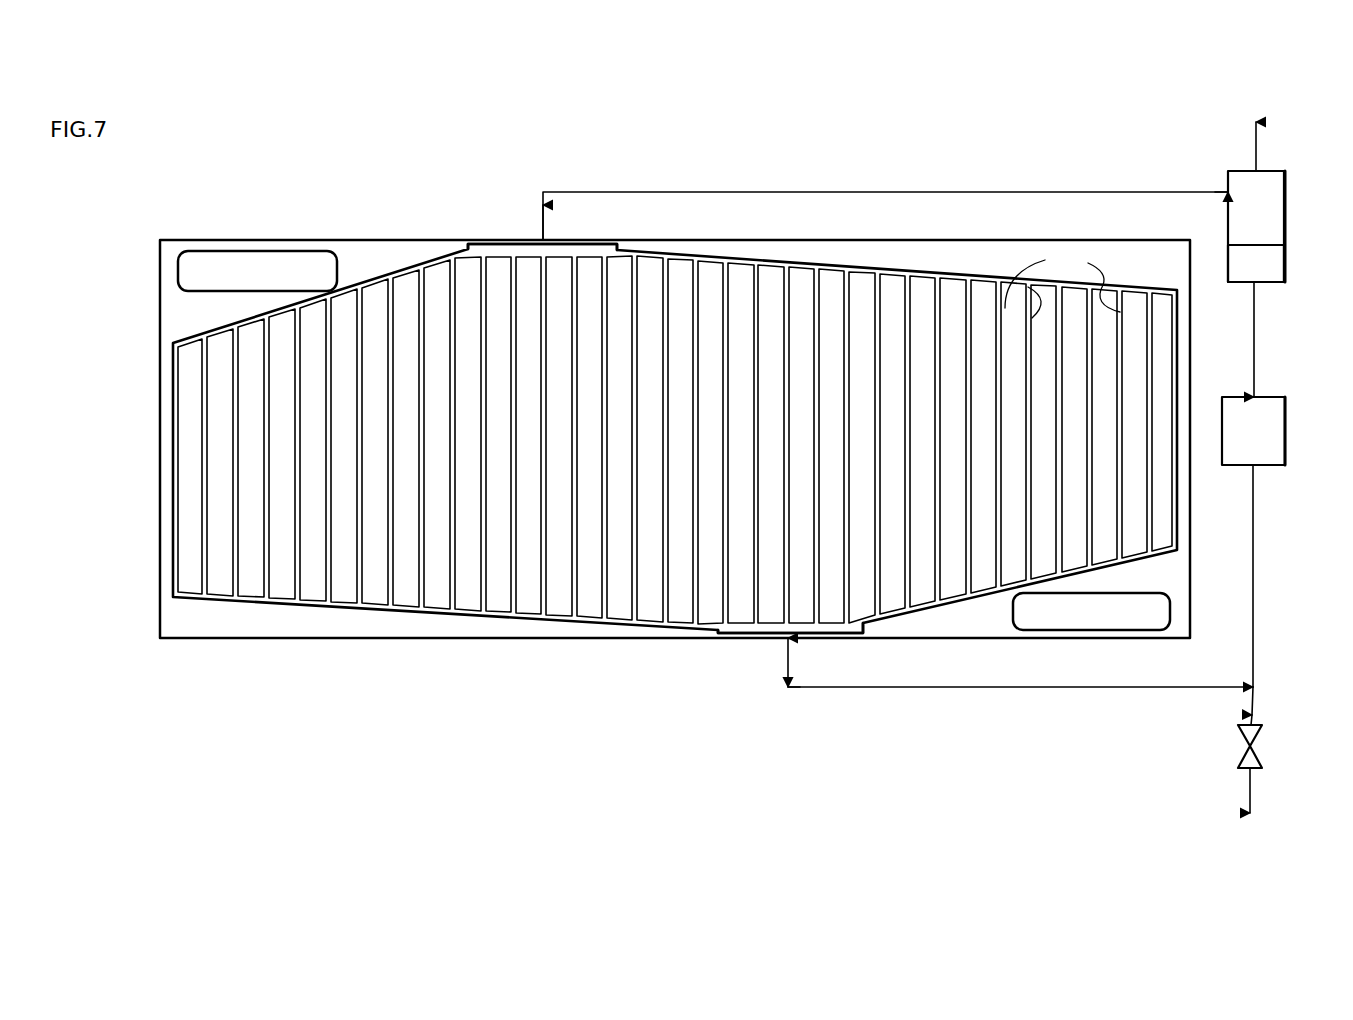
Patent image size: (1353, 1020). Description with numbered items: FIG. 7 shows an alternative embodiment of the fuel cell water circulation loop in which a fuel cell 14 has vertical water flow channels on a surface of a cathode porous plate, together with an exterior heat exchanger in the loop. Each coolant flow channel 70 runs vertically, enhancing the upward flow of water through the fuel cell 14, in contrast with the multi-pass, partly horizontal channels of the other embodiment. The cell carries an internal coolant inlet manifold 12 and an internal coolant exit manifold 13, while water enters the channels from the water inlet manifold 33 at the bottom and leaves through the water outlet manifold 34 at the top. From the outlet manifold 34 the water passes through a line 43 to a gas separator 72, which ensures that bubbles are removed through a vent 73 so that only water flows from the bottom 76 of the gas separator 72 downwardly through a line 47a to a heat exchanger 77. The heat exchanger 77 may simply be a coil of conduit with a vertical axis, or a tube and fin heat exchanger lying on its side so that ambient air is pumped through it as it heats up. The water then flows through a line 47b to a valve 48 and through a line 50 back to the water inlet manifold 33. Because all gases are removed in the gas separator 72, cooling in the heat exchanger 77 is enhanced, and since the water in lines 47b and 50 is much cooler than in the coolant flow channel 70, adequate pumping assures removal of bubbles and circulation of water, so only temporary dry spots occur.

The internal coolant inlet manifold 12 is at (1100, 617).
The internal coolant exit manifold 13 is at (272, 263).
The fuel cell 14 is at (411, 247).
The water inlet manifold 33 is at (765, 630).
The water outlet manifold 34 is at (568, 250).
The line 43 is at (870, 192).
The line 47a is at (1255, 352).
The line 47b is at (1252, 588).
The drain valve 48 is at (1257, 750).
The line 50 is at (995, 688).
The coolant flow channel 70 is at (1062, 285).
The gas separator 72 is at (1263, 213).
The vent 73 is at (1258, 160).
The bottom of the gas separator 76 is at (1268, 267).
The heat exchanger 77 is at (1267, 397).